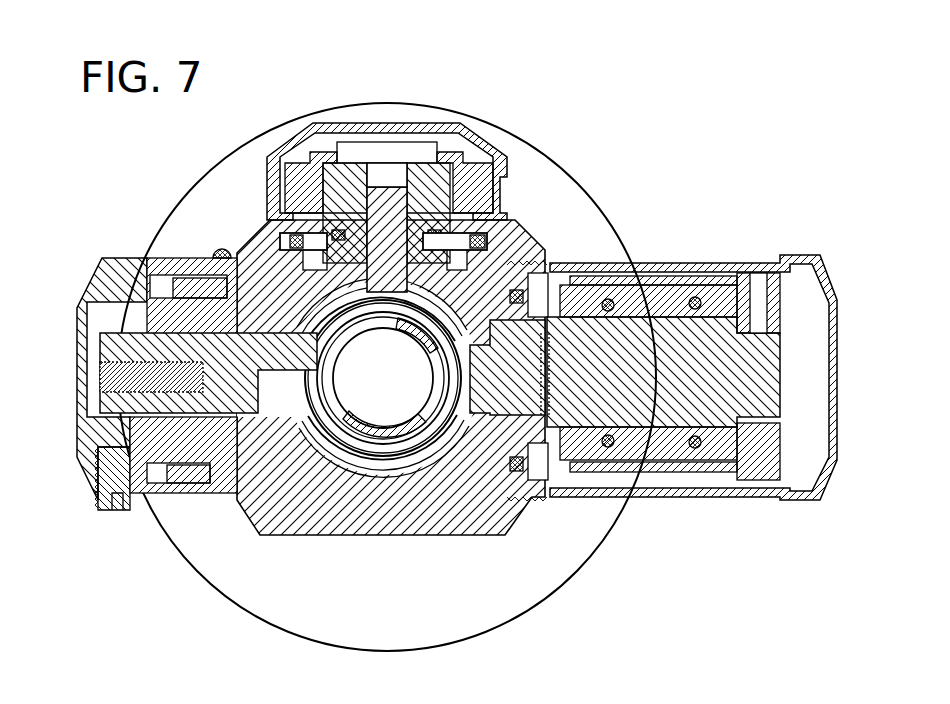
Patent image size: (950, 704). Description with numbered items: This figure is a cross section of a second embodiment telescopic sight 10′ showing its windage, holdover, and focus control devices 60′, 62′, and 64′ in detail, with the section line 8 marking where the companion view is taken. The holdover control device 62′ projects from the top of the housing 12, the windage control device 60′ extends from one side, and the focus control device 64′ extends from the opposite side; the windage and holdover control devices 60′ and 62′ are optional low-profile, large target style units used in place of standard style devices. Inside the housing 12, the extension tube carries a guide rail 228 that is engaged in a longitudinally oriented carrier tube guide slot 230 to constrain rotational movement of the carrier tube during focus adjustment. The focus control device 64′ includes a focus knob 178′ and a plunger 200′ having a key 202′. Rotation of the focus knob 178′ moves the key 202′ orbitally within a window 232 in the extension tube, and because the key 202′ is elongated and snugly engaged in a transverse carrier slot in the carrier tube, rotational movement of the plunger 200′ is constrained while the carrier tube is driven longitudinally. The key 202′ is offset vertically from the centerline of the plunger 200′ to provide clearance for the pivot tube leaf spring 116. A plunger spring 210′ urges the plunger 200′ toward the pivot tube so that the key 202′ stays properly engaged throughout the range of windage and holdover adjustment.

The telescopic sight 10′ is at (508, 82).
The housing 12 is at (545, 200).
The holdover control device 62′ is at (401, 121).
The focus control device 64′ is at (82, 235).
The focus knob 178′ is at (127, 257).
The plunger spring 210′ is at (78, 356).
The plunger 200′ is at (88, 437).
The guide rail 228 is at (443, 340).
The window 232 is at (323, 326).
The carrier tube guide slot 230 is at (432, 367).
The key 202′ is at (323, 326).
The pivot tube leaf spring 116 is at (333, 490).
The windage control device 60′ is at (807, 245).
The section line 8- 8 is at (40, 356).